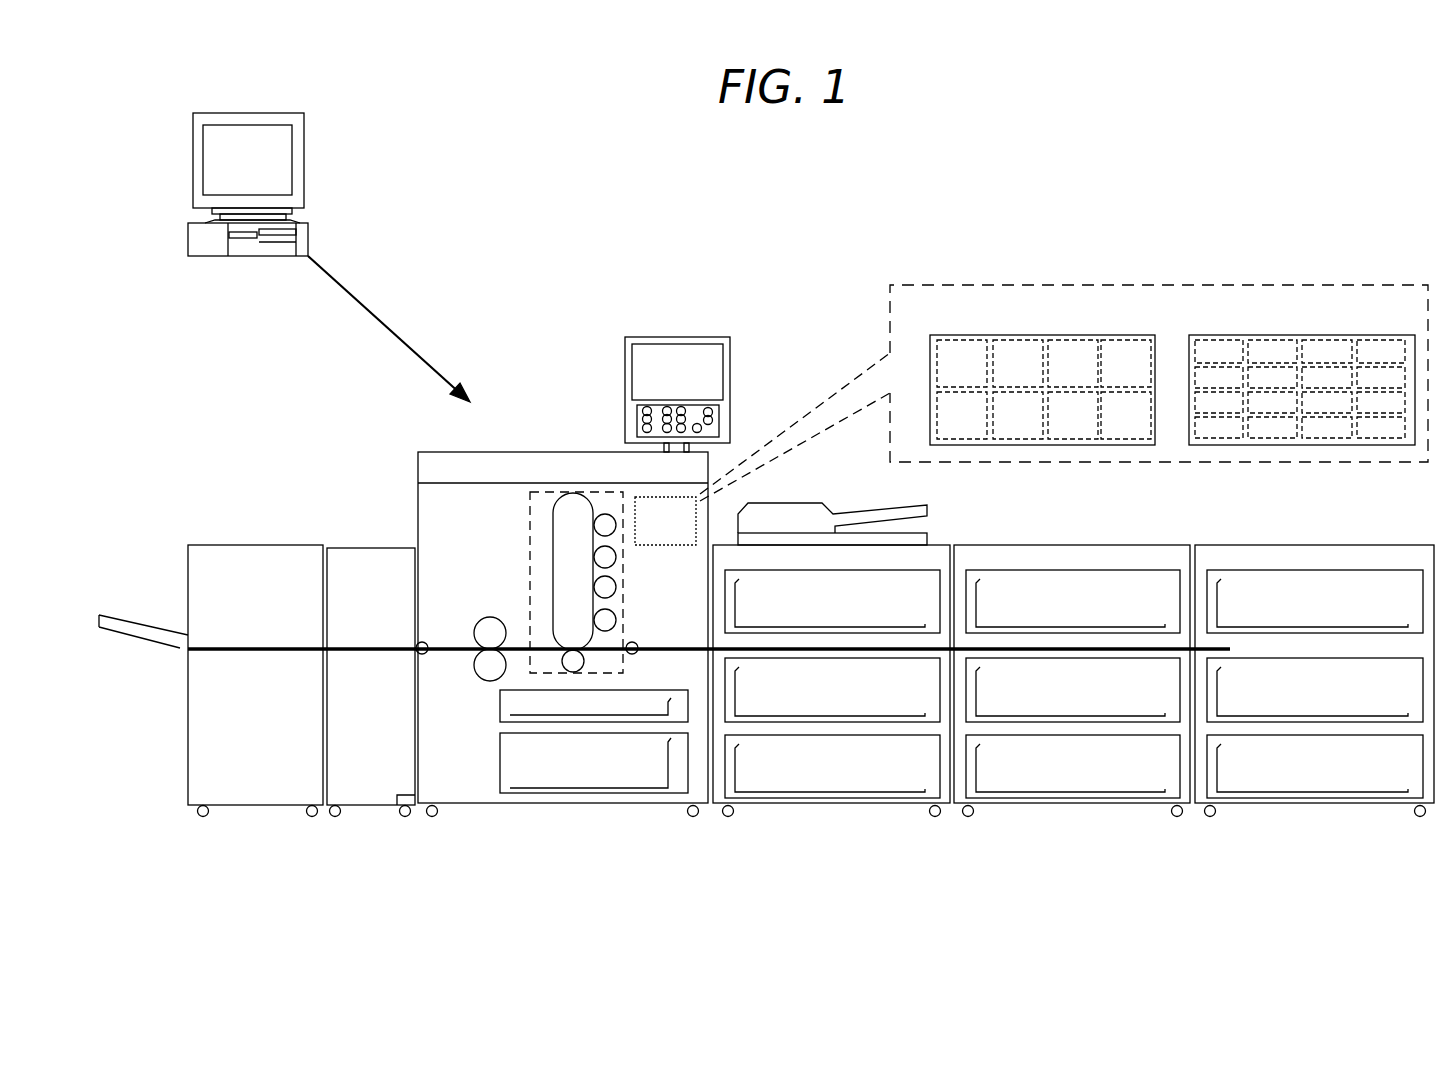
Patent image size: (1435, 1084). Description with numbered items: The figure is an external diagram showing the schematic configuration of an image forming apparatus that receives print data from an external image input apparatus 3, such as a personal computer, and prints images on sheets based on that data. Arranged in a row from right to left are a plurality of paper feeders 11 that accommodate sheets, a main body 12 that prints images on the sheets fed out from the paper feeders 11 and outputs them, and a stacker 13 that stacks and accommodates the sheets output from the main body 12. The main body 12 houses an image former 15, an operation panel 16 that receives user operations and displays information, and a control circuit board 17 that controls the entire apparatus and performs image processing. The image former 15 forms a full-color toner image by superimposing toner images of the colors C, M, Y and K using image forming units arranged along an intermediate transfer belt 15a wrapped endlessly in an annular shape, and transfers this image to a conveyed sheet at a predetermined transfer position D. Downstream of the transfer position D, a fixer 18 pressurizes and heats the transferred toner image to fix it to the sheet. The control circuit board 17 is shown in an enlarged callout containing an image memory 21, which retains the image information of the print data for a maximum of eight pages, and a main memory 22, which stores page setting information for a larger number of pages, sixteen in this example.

The external image input apparatus 3 is at (304, 164).
The paper feeder 11 is at (845, 805).
The main body 12 is at (528, 452).
The stacker 13 is at (250, 545).
The image former 15 is at (530, 582).
The intermediate transfer belt 15a is at (553, 525).
The operation panel 16 is at (688, 337).
The control circuit board 17 is at (678, 532).
The fixer 18 is at (478, 619).
The image memory 21 is at (1120, 335).
The main memory 22 is at (1360, 335).
The transfer position D is at (579, 650).